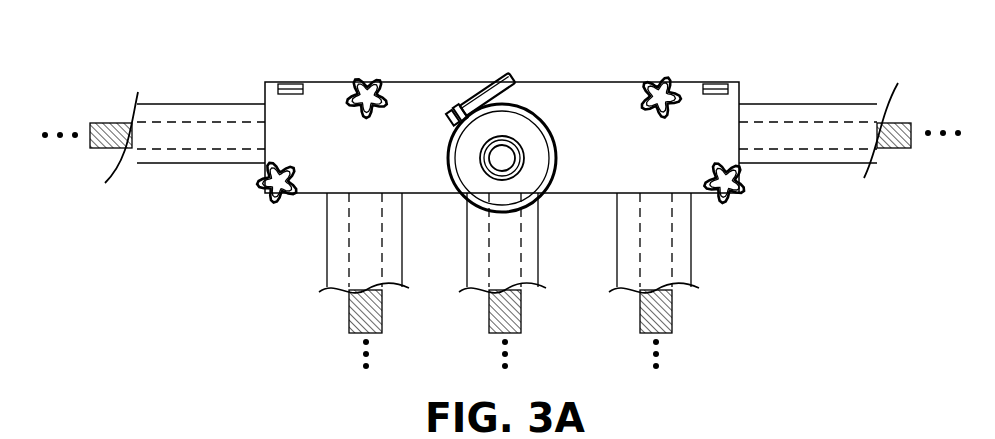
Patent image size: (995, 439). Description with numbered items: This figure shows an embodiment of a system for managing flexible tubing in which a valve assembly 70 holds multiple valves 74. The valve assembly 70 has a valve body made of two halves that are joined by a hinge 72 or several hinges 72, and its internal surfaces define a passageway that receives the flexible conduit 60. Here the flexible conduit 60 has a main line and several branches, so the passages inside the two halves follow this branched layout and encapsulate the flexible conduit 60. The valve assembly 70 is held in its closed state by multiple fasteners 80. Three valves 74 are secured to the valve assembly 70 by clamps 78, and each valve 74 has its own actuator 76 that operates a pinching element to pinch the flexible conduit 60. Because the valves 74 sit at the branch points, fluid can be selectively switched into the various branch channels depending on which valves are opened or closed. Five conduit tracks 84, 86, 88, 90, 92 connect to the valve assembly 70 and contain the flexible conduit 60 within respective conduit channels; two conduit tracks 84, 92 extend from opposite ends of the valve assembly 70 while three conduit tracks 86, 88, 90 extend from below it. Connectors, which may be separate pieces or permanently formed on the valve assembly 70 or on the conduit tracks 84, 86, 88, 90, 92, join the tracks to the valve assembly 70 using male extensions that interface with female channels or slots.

The flexible conduit 60 is at (113, 122).
The valve assembly 70 is at (330, 97).
The hinge 72 is at (293, 82).
The valve 74 is at (542, 112).
The actuator 76 is at (538, 145).
The clamp 78 is at (482, 92).
The fastener 80 is at (278, 190).
The conduit track 84 is at (205, 163).
The conduit track 86 is at (340, 248).
The conduit track 88 is at (476, 248).
The conduit track 90 is at (622, 248).
The conduit track 92 is at (798, 104).